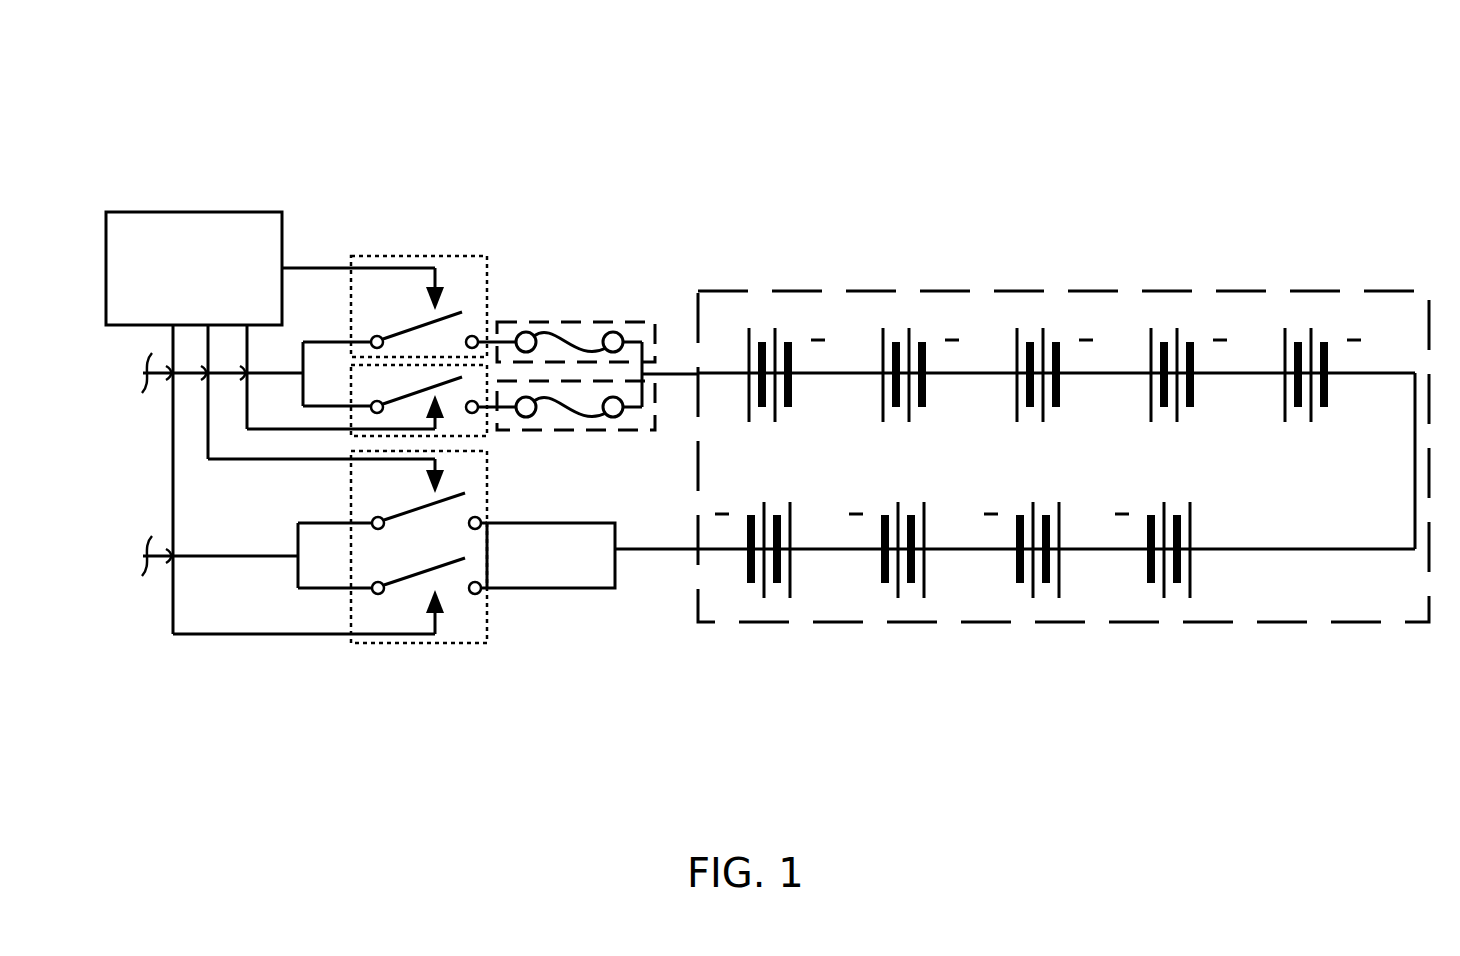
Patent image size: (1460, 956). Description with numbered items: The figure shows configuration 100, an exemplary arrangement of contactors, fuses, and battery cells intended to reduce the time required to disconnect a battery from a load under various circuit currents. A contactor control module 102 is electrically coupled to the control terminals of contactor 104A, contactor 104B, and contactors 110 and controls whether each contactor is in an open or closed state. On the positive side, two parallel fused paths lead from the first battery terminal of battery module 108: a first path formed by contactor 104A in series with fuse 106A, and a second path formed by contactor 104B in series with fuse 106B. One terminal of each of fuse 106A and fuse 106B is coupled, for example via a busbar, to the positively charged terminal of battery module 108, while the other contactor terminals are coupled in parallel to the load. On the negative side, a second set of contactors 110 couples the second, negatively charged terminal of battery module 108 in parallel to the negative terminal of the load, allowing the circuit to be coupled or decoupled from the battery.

The configuration 100 is at (790, 34).
The contactor control module 102 is at (158, 212).
The contactor 104A is at (439, 257).
The contactor 104B is at (488, 438).
The fuse 106A is at (583, 321).
The fuse 106B is at (623, 432).
The battery module 108 is at (758, 291).
The contactors 110 is at (474, 648).